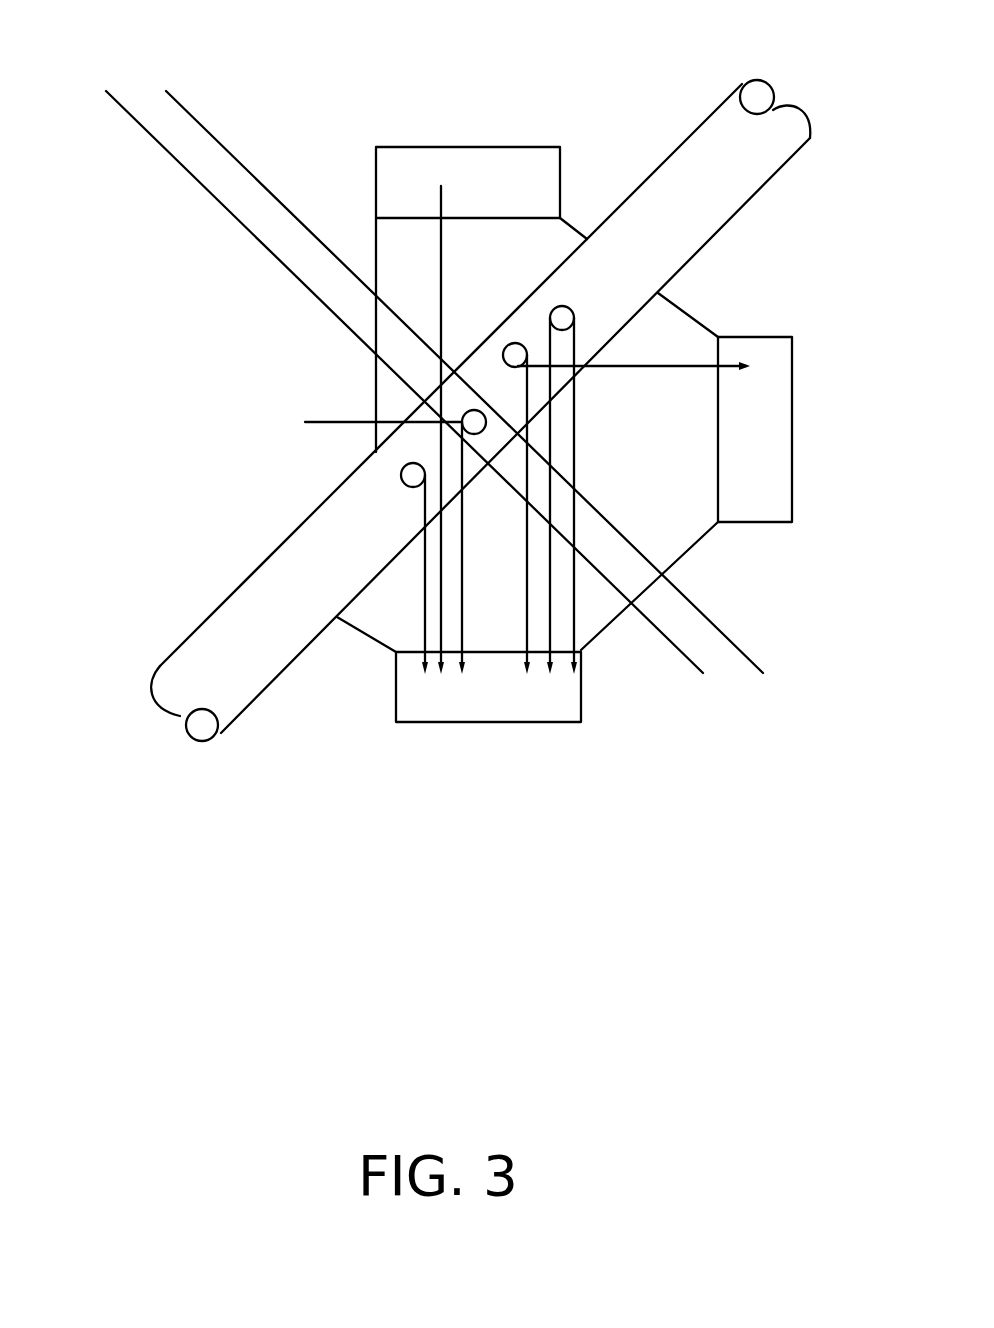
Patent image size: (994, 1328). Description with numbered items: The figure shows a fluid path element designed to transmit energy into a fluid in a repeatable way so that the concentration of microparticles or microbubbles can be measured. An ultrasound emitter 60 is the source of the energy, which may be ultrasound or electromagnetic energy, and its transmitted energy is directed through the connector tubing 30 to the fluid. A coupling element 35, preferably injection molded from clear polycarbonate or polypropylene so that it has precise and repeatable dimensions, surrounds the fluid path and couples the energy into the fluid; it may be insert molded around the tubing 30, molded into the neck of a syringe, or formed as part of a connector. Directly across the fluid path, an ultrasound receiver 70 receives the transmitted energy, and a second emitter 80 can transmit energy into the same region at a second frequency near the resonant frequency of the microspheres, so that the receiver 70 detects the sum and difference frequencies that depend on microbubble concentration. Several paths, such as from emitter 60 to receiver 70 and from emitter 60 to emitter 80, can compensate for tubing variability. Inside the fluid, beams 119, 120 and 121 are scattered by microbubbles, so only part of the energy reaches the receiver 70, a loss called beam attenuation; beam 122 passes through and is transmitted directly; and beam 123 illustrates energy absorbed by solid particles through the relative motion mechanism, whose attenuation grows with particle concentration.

The connector tubing 30 is at (200, 617).
The coupling element 35 is at (640, 596).
The ultrasound emitter 60 is at (258, 720).
The ultrasound receiver 70 is at (523, 143).
The second emitter 80 is at (798, 515).
The scattered beam 119 is at (551, 675).
The scattered beam 120 is at (528, 675).
The scattered beam 121 is at (463, 675).
The transmitted beam 122 is at (442, 675).
The absorbed beam 123 is at (426, 675).